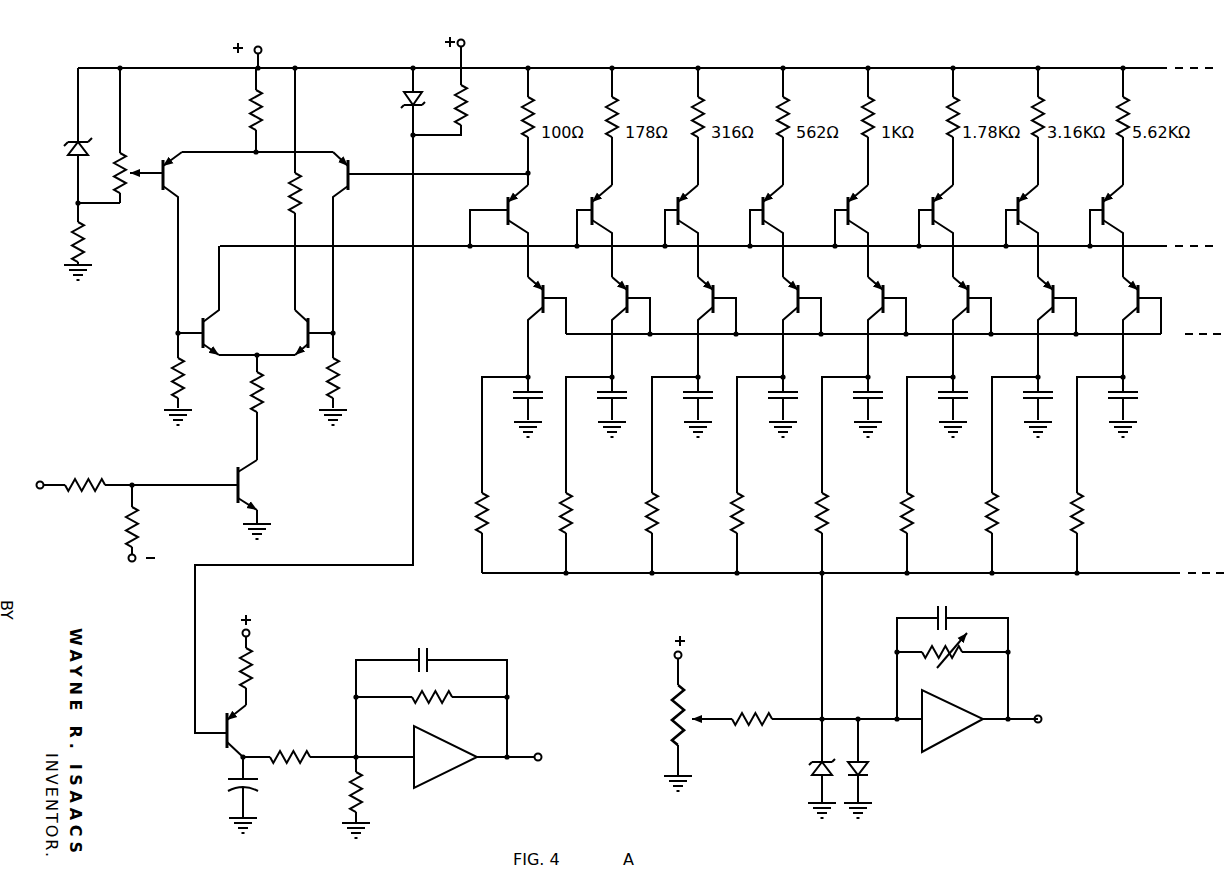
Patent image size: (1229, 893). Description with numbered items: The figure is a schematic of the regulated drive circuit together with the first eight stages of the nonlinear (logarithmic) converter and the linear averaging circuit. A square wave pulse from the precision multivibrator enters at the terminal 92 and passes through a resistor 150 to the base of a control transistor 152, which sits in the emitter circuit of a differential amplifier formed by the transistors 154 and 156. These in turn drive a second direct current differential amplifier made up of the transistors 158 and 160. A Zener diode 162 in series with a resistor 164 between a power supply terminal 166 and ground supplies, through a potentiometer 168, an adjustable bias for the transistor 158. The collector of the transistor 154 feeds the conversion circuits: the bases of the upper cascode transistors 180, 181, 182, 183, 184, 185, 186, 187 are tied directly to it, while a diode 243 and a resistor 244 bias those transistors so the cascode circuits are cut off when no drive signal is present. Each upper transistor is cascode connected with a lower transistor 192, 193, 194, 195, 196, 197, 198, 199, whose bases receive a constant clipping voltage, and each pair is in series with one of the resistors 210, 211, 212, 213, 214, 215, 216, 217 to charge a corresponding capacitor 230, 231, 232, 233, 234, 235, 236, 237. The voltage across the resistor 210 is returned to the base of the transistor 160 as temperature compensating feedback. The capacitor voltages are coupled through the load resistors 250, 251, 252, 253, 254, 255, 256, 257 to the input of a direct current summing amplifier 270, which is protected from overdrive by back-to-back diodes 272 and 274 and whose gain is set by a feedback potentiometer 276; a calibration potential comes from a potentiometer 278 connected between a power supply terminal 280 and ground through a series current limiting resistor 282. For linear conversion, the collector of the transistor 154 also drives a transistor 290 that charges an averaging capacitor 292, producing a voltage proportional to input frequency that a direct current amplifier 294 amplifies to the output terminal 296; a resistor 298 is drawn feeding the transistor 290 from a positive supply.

The terminal 92 is at (40, 481).
The resistor 150 is at (83, 482).
The control transistor 152 is at (247, 481).
The transistor 154 is at (208, 321).
The transistor 156 is at (304, 334).
The transistor 158 is at (166, 178).
The transistor 160 is at (349, 164).
The Zener diode 162 is at (66, 153).
The resistor 164 is at (87, 242).
The power supply terminal 166 is at (263, 53).
The potentiometer 168 is at (124, 157).
The transistor 180 is at (515, 206).
The transistor 181 is at (599, 206).
The transistor 182 is at (685, 206).
The transistor 183 is at (770, 206).
The transistor 184 is at (855, 206).
The transistor 185 is at (940, 206).
The transistor 186 is at (1025, 206).
The transistor 187 is at (1110, 206).
The transistor 192 is at (530, 298).
The transistor 193 is at (614, 298).
The transistor 194 is at (700, 298).
The transistor 195 is at (785, 298).
The transistor 196 is at (870, 298).
The transistor 197 is at (955, 298).
The transistor 198 is at (1040, 298).
The transistor 199 is at (1125, 298).
The resistor 210 is at (533, 121).
The resistor 211 is at (617, 121).
The resistor 212 is at (703, 121).
The resistor 213 is at (788, 121).
The resistor 214 is at (873, 121).
The resistor 215 is at (958, 121).
The resistor 216 is at (1043, 121).
The resistor 217 is at (1128, 121).
The capacitor 230 is at (530, 386).
The capacitor 231 is at (614, 386).
The capacitor 232 is at (700, 386).
The capacitor 233 is at (785, 386).
The capacitor 234 is at (870, 386).
The capacitor 235 is at (955, 386).
The capacitor 236 is at (1040, 386).
The capacitor 237 is at (1125, 386).
The diode 243 is at (403, 97).
The resistor 244 is at (464, 115).
The load resistor 250 is at (488, 521).
The load resistor 251 is at (572, 521).
The load resistor 252 is at (658, 521).
The load resistor 253 is at (743, 521).
The load resistor 254 is at (828, 521).
The load resistor 255 is at (913, 521).
The load resistor 256 is at (998, 521).
The load resistor 257 is at (1083, 521).
The direct current summing amplifier 270 is at (965, 752).
The diode 272 is at (807, 767).
The diode 274 is at (871, 773).
The feedback potentiometer 276 is at (985, 655).
The potentiometer 278 is at (687, 695).
The power supply terminal 280 is at (674, 656).
The current limiting resistor 282 is at (754, 710).
The transistor 290 is at (234, 734).
The averaging capacitor 292 is at (262, 786).
The direct current amplifier 294 is at (445, 782).
The output terminal 296 is at (548, 743).
The resistor 298 is at (255, 650).